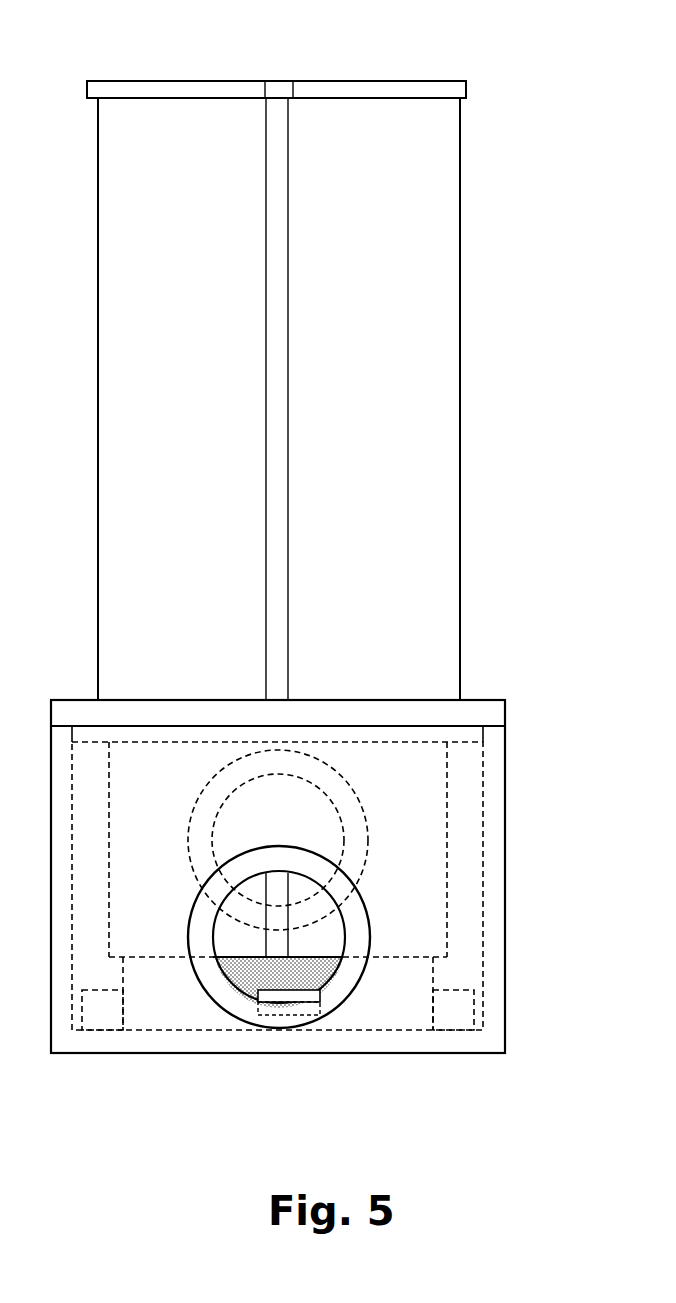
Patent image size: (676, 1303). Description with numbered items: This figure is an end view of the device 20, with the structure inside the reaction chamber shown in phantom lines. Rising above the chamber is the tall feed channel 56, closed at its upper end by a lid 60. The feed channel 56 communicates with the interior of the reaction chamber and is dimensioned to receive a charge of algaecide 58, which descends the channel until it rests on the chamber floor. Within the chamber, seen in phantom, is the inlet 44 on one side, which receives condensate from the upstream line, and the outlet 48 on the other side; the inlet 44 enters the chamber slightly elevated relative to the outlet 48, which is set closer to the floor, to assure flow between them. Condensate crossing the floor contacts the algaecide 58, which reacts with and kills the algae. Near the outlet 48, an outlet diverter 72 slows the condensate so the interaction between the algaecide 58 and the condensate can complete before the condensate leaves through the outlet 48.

The device 20 is at (527, 372).
The feed channel 56 is at (150, 321).
The lid 60 is at (125, 81).
The inlet 44 is at (348, 760).
The outlet 48 is at (362, 902).
The algaecide 58 is at (242, 970).
The outlet diverter 72 is at (290, 997).